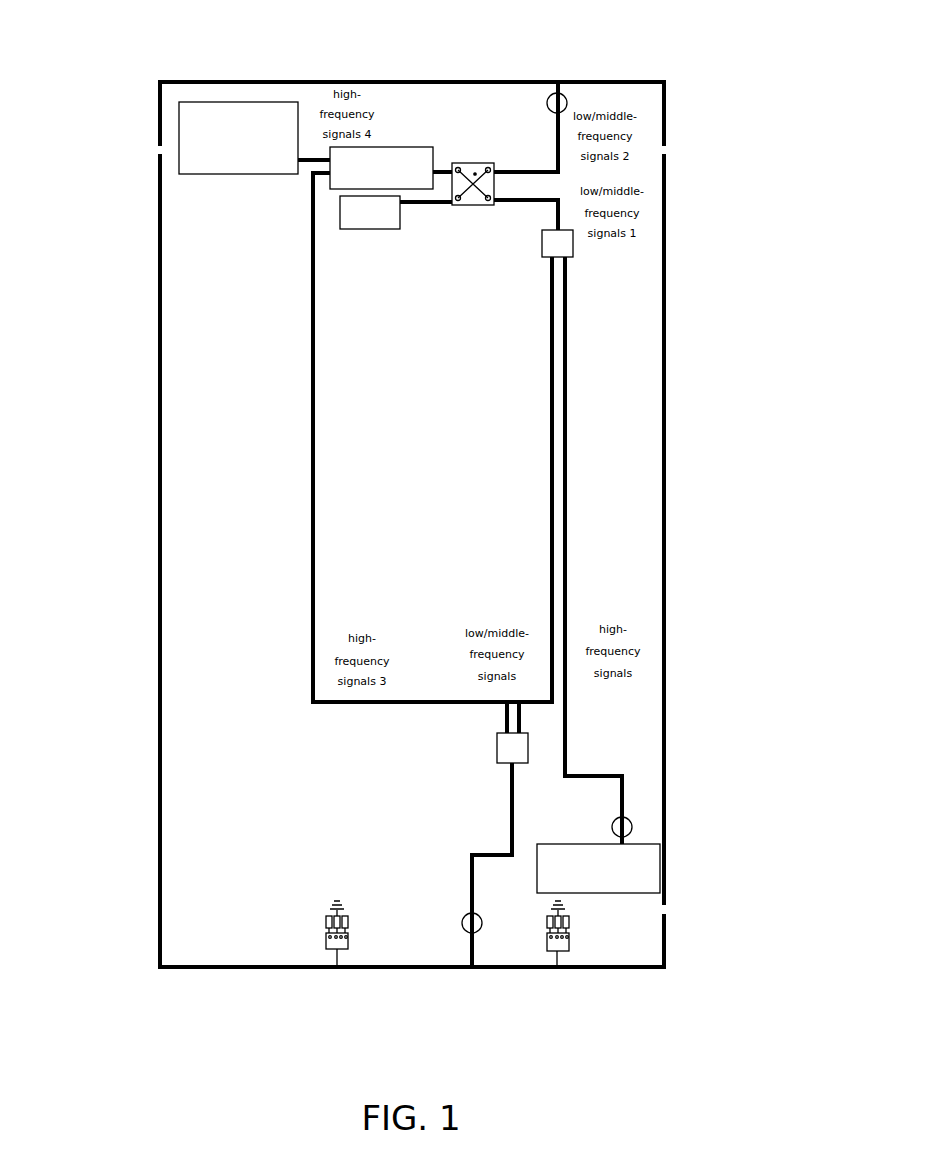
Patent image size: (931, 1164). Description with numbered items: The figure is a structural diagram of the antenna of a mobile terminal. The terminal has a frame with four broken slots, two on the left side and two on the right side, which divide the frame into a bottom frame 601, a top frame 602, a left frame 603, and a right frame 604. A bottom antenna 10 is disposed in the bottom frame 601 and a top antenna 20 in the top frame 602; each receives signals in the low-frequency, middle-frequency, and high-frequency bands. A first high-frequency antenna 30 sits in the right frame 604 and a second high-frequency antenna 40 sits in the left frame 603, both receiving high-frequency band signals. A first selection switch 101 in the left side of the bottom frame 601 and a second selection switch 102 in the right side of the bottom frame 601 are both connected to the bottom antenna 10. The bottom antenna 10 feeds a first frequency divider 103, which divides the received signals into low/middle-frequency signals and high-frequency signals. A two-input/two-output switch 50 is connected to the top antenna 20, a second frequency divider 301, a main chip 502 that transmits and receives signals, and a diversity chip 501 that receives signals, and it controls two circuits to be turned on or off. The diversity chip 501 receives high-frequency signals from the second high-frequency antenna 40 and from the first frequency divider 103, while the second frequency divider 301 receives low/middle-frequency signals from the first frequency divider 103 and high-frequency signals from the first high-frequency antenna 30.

The bottom antenna 10 is at (412, 968).
The top antenna 20 is at (462, 85).
The first high-frequency antenna 30 is at (660, 853).
The second high-frequency antenna 40 is at (232, 102).
The two-input/two-output switch 50 is at (473, 162).
The first selection switch 101 is at (325, 943).
The second selection switch 102 is at (540, 953).
The first frequency divider 103 is at (528, 747).
The second frequency divider 301 is at (573, 240).
The diversity chip 501 is at (387, 147).
The main chip 502 is at (340, 213).
The bottom frame 601 is at (664, 947).
The top frame 602 is at (665, 113).
The left frame 603 is at (158, 393).
The right frame 604 is at (664, 463).